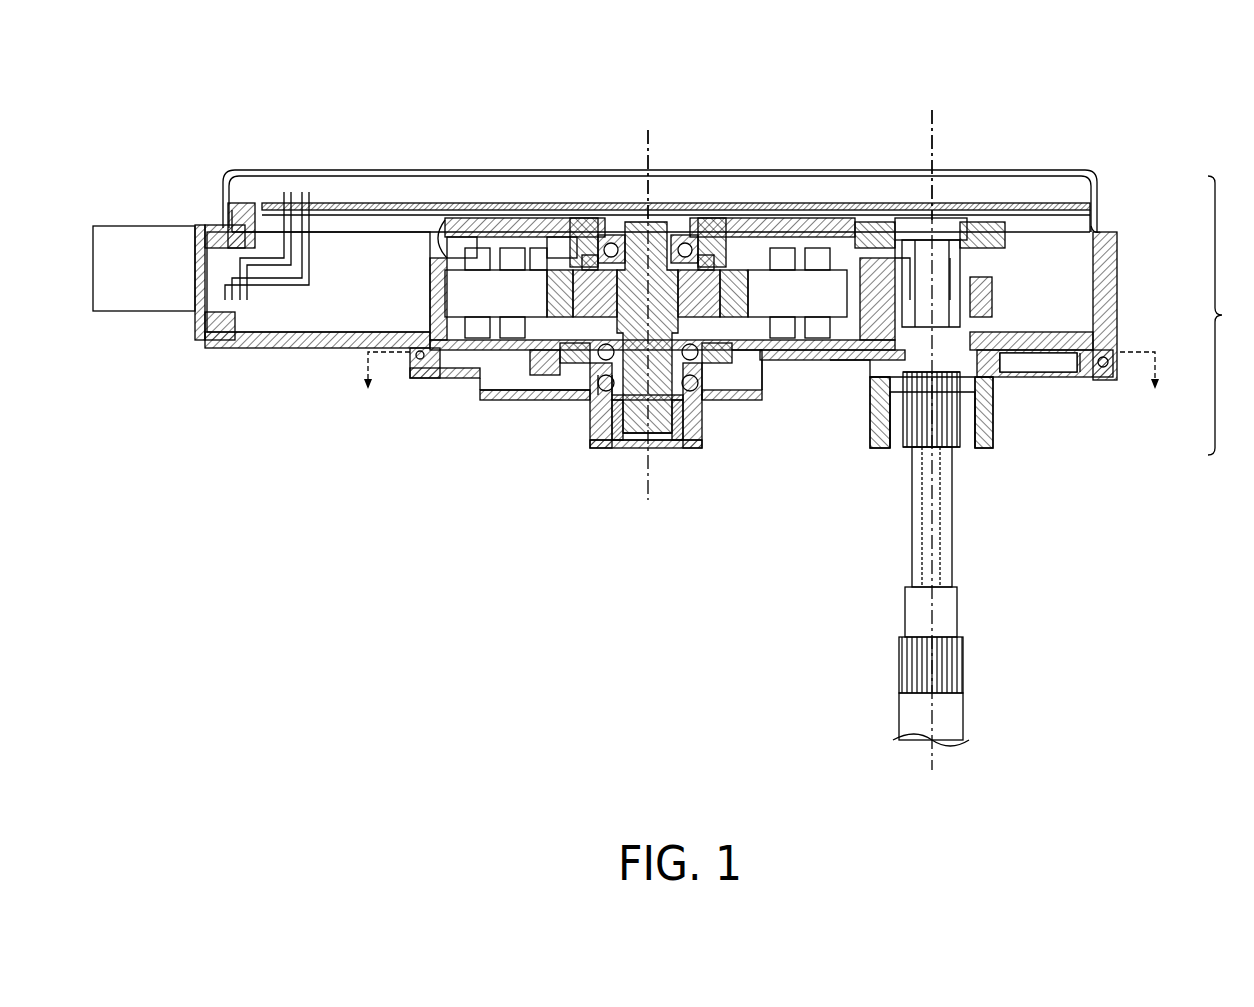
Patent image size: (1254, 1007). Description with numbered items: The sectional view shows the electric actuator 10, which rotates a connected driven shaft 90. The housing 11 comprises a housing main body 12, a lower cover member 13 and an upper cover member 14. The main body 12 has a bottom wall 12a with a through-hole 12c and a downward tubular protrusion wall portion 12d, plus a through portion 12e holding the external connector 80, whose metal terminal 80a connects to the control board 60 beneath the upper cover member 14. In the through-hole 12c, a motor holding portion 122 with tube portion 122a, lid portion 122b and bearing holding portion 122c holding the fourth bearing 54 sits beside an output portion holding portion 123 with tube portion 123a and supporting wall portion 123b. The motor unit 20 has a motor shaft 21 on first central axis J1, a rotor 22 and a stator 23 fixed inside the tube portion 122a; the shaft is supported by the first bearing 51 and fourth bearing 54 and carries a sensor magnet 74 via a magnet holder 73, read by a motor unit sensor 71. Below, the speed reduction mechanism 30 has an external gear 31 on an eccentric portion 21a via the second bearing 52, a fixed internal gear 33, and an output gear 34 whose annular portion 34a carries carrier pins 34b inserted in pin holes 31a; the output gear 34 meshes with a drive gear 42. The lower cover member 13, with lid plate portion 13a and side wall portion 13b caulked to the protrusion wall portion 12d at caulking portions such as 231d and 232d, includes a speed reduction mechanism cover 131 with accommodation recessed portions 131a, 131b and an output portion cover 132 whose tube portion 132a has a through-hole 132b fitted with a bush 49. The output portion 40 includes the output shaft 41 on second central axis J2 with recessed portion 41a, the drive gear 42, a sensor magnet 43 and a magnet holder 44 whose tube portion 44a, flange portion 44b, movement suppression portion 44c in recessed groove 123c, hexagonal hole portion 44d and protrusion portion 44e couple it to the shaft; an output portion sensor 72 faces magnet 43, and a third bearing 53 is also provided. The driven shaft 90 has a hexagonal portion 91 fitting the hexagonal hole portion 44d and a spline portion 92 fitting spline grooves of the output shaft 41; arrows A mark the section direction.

The electric actuator 10 is at (1032, 76).
The housing 11 is at (1230, 315).
The housing main body 12 is at (1117, 292).
The bottom wall 12a is at (290, 348).
The through-hole 12c is at (482, 388).
The protrusion wall portion 12d is at (430, 378).
The through portion 12e is at (195, 318).
The lower cover member 13 is at (1110, 380).
The lid plate portion 13a is at (760, 547).
The side wall portion 13b is at (440, 375).
The upper cover member 14 is at (1100, 228).
The motor unit 20 is at (380, 203).
The motor shaft 21 is at (636, 222).
The eccentric portion 21a is at (648, 440).
The rotor 22 is at (740, 270).
The stator 23 is at (812, 255).
The speed reduction mechanism 30 is at (710, 405).
The external gear 31 is at (560, 385).
The pin holes 31a is at (763, 400).
The internal gear 33 is at (535, 378).
The output gear 34 is at (588, 575).
The annular portion 34a is at (560, 398).
The carrier pins 34b is at (575, 398).
The output portion 40 is at (992, 440).
The output shaft 41 is at (990, 420).
The recessed portion 41a is at (906, 455).
The drive gear 42 is at (820, 393).
The sensor magnet for output portion 43 is at (990, 275).
The magnet holder 44 is at (914, 238).
The tube portion 44a is at (878, 240).
The flange portion 44b is at (893, 236).
The movement suppression portion 44c is at (950, 240).
The hexagonal hole portion 44d is at (982, 222).
The protrusion portion 44e is at (866, 386).
The bush 49 is at (887, 452).
The first bearing 51 is at (662, 440).
The second bearing 52 is at (688, 420).
The third bearing 53 is at (700, 440).
The fourth bearing 54 is at (702, 218).
The control board 60 is at (335, 192).
The motor unit sensor 71 is at (690, 235).
The output portion sensor 72 is at (905, 222).
The magnet holder 73 is at (608, 234).
The sensor magnet for motor unit 74 is at (722, 218).
The external connector 80 is at (145, 240).
The metal terminal 80a is at (260, 300).
The driven shaft 90 is at (900, 716).
The hexagonal portion 91 is at (950, 555).
The spline portion 92 is at (963, 660).
The motor holding portion 122 is at (395, 70).
The tube portion 122a is at (432, 237).
The lid portion 122b is at (475, 248).
The bearing holding portion 122c is at (585, 237).
The output portion holding portion 123 is at (1033, 115).
The tube portion 123a is at (1040, 330).
The supporting wall portion 123b is at (1055, 330).
The recessed groove 123c is at (1020, 365).
The speed reduction mechanism cover 131 is at (760, 400).
The accommodation recessed portion 131a is at (612, 448).
The accommodation recessed portion 131b is at (490, 398).
The output portion cover 132 is at (880, 440).
The tube portion 132a is at (985, 440).
The through-hole 132b is at (966, 440).
The caulking portion 231d is at (412, 360).
The caulking portion 232d is at (1105, 380).
The first central axis J1 is at (650, 142).
The second central axis J2 is at (934, 118).
The section line A is at (761, 369).